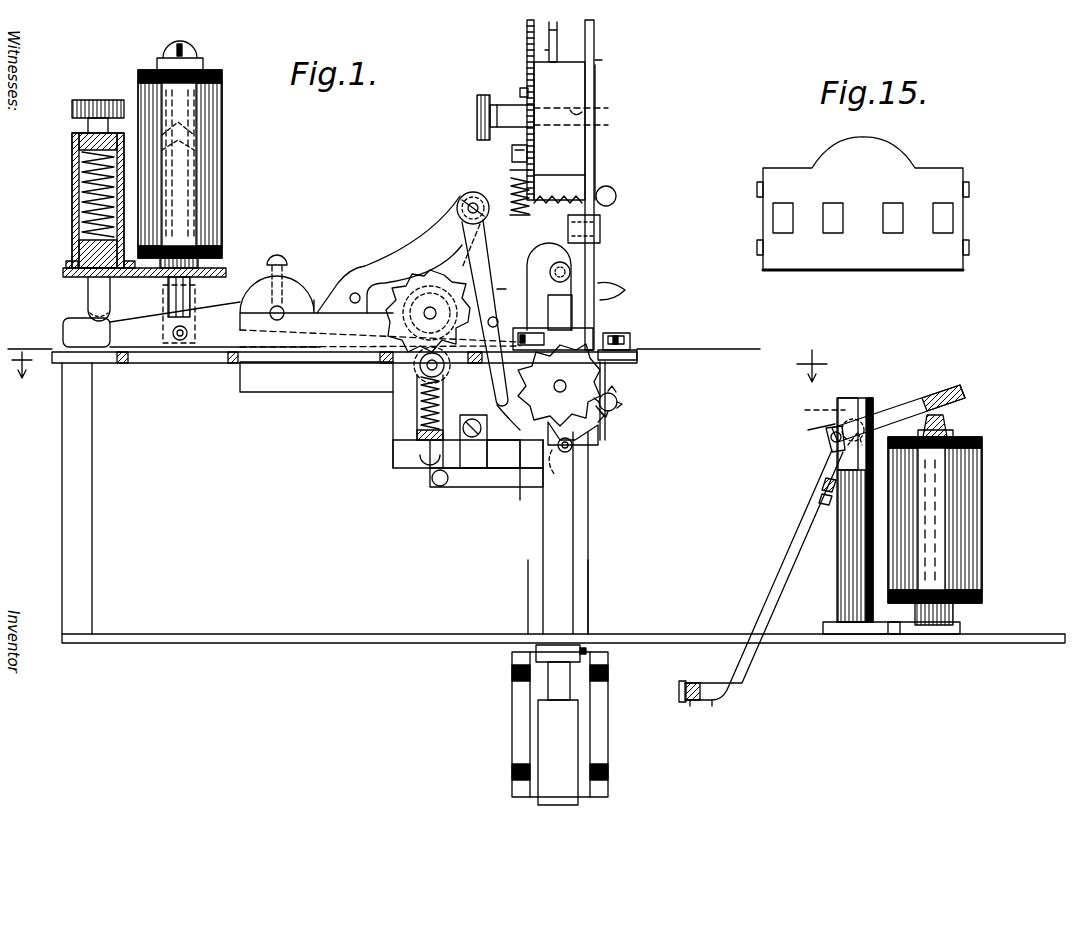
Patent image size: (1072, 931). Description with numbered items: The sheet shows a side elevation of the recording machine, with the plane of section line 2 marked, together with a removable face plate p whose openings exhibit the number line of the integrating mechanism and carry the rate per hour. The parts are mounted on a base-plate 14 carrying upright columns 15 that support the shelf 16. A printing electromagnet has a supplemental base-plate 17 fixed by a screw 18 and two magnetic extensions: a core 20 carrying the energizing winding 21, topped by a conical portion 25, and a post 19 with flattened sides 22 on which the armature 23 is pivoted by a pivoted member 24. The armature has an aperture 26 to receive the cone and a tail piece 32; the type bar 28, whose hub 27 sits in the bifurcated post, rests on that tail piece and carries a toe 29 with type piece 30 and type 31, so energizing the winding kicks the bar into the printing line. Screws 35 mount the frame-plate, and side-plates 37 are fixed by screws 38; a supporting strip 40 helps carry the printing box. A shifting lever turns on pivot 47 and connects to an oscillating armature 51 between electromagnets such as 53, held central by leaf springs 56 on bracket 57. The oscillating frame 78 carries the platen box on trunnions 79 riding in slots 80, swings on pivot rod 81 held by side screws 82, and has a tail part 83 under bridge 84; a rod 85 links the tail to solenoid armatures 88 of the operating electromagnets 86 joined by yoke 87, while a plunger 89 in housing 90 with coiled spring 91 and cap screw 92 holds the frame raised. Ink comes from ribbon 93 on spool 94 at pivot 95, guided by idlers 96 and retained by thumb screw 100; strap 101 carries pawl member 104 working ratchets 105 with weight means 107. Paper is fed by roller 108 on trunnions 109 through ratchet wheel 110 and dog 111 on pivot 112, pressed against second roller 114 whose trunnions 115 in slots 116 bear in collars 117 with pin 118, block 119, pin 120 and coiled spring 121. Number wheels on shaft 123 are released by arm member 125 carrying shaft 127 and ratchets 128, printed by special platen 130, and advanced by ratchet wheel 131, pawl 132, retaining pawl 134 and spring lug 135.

In FIG. 1, the section line 2— 2 is at (420, 369).
In FIG. 1, the base-plate 14 is at (312, 643).
In FIG. 1, the upright column 15 is at (62, 511).
In FIG. 1, the shelf 16 is at (100, 363).
In FIG. 1, the supplemental base-plate 17 is at (860, 634).
In FIG. 1, the screw 18 is at (894, 636).
In FIG. 1, the upward extension (post) 19 is at (845, 584).
In FIG. 1, the upward extension (core) 20 is at (953, 612).
In FIG. 1, the energizing winding 21 is at (960, 520).
In FIG. 1, the flattened sides 22 is at (858, 405).
In FIG. 1, the armature 23 is at (900, 408).
In FIG. 1, the pivoted member 24 is at (826, 432).
In FIG. 1, the conical portion 25 is at (945, 425).
In FIG. 1, the aperture 26 is at (935, 395).
In FIG. 1, the hub 27 is at (823, 421).
In FIG. 1, the type bar 28 is at (780, 548).
In FIG. 1, the toe 29 is at (712, 700).
In FIG. 1, the type piece 30 is at (690, 700).
In FIG. 1, the type 31 is at (683, 684).
In FIG. 1, the tail piece 32 is at (830, 492).
In FIG. 1, the screw 35 is at (622, 335).
In FIG. 1, the side-plate 37 is at (297, 392).
In FIG. 1, the screw 38 is at (604, 288).
In FIG. 1, the supporting strip 40 is at (589, 600).
In FIG. 1, the pivot 47 is at (586, 652).
In FIG. 1, the oscillating armature 51 is at (575, 795).
In FIG. 1, the electromagnet 53 is at (596, 737).
In FIG. 1, the leaf spring 56 is at (525, 485).
In FIG. 1, the bracket 57 is at (488, 490).
In FIG. 1, the oscillating frame 78 is at (380, 245).
In FIG. 1, the trunnion 79 is at (572, 265).
In FIG. 1, the slot 80 is at (565, 330).
In FIG. 1, the pivot rod 81 is at (282, 308).
In FIG. 1, the side screw 82 is at (278, 262).
In FIG. 1, the tail part 83 is at (145, 360).
In FIG. 1, the bridge 84 is at (212, 273).
In FIG. 1, the rod 85 is at (183, 340).
In FIG. 1, the operating electromagnet 86 is at (205, 165).
In FIG. 1, the yoke 87 is at (200, 58).
In FIG. 1, the solenoid armature 88 is at (183, 291).
In FIG. 1, the plunger 89 is at (88, 300).
In FIG. 1, the housing 90 is at (72, 231).
In FIG. 1, the coiled spring 91 is at (79, 186).
In FIG. 1, the cap screw 92 is at (79, 138).
In FIG. 1, the ribbon 93 is at (557, 190).
In FIG. 1, the spool 94 is at (578, 137).
In FIG. 1, the pivot 95 is at (604, 109).
In FIG. 1, the idler 96 is at (600, 228).
In FIG. 1, the thumb screw 100 is at (477, 118).
In FIG. 1, the strap 101 is at (557, 38).
In FIG. 1, the pawl member 104 is at (522, 90).
In FIG. 1, the ratchet 105 is at (527, 48).
In FIG. 1, the weight means 107 is at (616, 203).
In FIG. 1, the roller 108 is at (424, 290).
In FIG. 1, the trunnion 109 is at (432, 306).
In FIG. 1, the ratchet wheel 110 is at (390, 348).
In FIG. 1, the dog 111 is at (468, 248).
In FIG. 1, the pivot 112 is at (472, 192).
In FIG. 1, the second roller 114 is at (422, 372).
In FIG. 1, the trunnion 115 is at (426, 394).
In FIG. 1, the slot 116 is at (432, 455).
In FIG. 1, the collar 117 is at (472, 470).
In FIG. 1, the pin 118 is at (428, 434).
In FIG. 1, the block 119 is at (444, 482).
In FIG. 1, the pin 120 is at (437, 470).
In FIG. 1, the coiled spring 121 is at (430, 470).
In FIG. 1, the shaft 123 is at (566, 386).
In FIG. 1, the arm member 125 is at (590, 441).
In FIG. 1, the shaft 127 is at (612, 412).
In FIG. 1, the ratchet 128 is at (618, 404).
In FIG. 1, the special platen 130 is at (560, 300).
In FIG. 1, the ratchet wheel 131 is at (590, 378).
In FIG. 1, the pawl 132 is at (513, 288).
In FIG. 1, the retaining pawl 134 is at (570, 452).
In FIG. 1, the spring lug 135 is at (505, 470).
In FIG. 15, the plate p is at (958, 207).